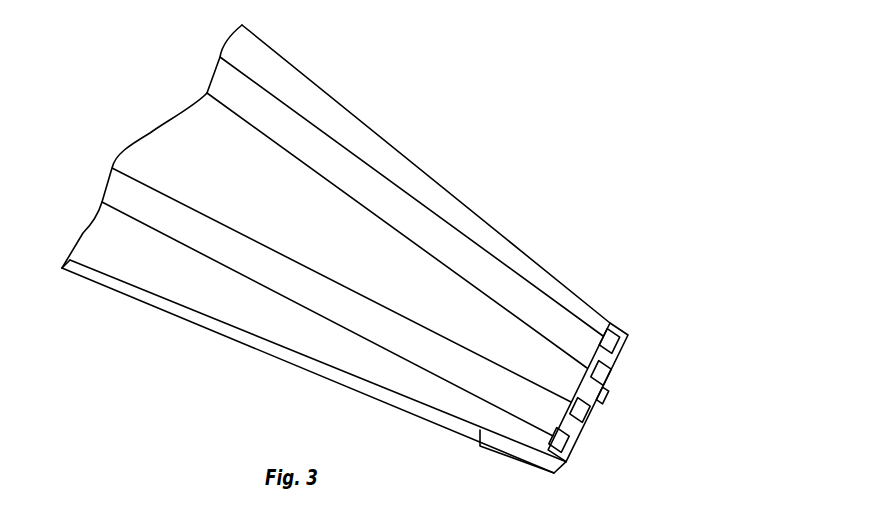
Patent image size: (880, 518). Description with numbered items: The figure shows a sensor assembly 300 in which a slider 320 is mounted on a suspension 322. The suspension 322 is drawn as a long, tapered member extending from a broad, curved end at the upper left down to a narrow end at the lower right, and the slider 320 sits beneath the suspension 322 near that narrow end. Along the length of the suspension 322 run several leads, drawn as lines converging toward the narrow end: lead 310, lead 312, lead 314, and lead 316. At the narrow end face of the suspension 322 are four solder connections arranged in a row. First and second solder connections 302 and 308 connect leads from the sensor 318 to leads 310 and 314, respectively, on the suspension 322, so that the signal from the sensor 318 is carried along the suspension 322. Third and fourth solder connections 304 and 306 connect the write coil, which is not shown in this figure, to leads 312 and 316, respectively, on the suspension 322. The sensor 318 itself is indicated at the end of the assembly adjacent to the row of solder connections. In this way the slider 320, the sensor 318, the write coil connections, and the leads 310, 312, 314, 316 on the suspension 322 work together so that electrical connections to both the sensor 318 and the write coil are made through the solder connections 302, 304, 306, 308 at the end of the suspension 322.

The sensor assembly 300 is at (200, 387).
The first solder connection 302 is at (561, 447).
The third solder connection 304 is at (578, 417).
The fourth solder connection 306 is at (597, 362).
The second solder connection 308 is at (627, 337).
The lead 310 is at (300, 298).
The lead 312 is at (425, 330).
The lead 314 is at (483, 249).
The lead 316 is at (525, 322).
The sensor 318 is at (603, 400).
The slider 320 is at (500, 451).
The suspension 322 is at (422, 398).